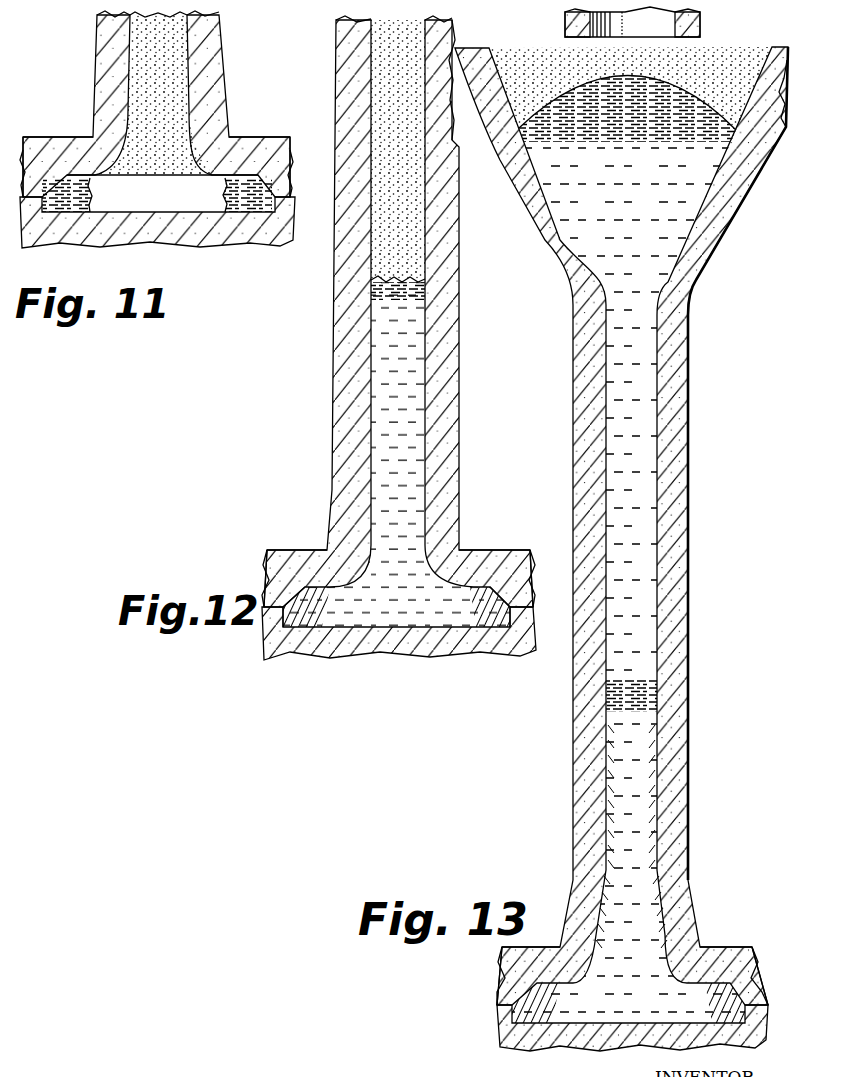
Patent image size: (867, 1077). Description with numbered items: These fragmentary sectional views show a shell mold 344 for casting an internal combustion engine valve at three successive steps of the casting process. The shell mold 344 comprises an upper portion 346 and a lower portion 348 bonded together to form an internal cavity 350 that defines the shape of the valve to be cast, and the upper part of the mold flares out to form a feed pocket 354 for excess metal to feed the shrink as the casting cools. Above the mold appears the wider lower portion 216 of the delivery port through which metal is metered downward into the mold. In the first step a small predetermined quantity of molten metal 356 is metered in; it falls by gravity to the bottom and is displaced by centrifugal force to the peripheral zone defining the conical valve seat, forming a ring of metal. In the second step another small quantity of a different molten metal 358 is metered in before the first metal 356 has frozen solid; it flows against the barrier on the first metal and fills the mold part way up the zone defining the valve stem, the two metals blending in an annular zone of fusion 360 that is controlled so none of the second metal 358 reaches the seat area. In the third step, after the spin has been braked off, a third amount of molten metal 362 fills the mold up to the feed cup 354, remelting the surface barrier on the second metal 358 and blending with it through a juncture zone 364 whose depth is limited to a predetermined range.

In FIG. 11, the shell mold 344 is at (90, 57).
In FIG. 12, the shell mold 344 is at (330, 364).
In FIG. 13, the shell mold 344 is at (566, 818).
In FIG. 11, the upper portion 346 is at (233, 140).
In FIG. 12, the upper portion 346 is at (455, 528).
In FIG. 13, the upper portion 346 is at (680, 508).
In FIG. 11, the lower portion 348 is at (276, 240).
In FIG. 12, the lower portion 348 is at (522, 657).
In FIG. 13, the lower portion 348 is at (520, 1037).
In FIG. 11, the internal cavity 350 is at (165, 75).
In FIG. 12, the internal cavity 350 is at (412, 232).
In FIG. 13, the feed pocket 354 is at (500, 68).
In FIG. 11, the molten metal 356 is at (245, 207).
In FIG. 12, the molten metal 356 is at (500, 605).
In FIG. 13, the molten metal 356 is at (735, 998).
In FIG. 12, the different molten metal 358 is at (410, 428).
In FIG. 13, the different molten metal 358 is at (635, 808).
In FIG. 12, the zone of fusion 360 is at (318, 612).
In FIG. 13, the third amount of molten metal 362 is at (640, 398).
In FIG. 13, the juncture zone 364 is at (640, 698).
In FIG. 13, the wider lower portion 216 is at (660, 30).